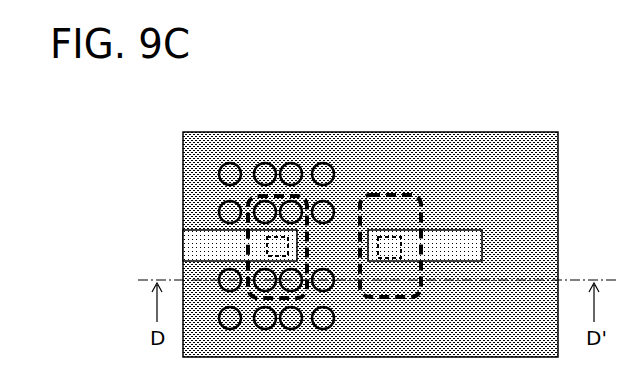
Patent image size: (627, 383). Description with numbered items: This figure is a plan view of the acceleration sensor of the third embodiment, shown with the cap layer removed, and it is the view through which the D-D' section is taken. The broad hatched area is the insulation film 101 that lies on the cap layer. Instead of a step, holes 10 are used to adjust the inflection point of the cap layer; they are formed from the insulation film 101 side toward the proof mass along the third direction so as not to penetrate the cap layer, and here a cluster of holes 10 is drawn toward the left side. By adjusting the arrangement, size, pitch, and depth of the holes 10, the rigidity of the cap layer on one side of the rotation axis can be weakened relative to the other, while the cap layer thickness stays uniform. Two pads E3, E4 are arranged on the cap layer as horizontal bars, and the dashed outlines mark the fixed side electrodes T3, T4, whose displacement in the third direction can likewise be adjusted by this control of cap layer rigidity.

The insulation film 101 is at (536, 142).
The holes 10 is at (235, 163).
The pad E3 is at (195, 245).
The pad E4 is at (457, 245).
The fixed side electrode T3 is at (282, 195).
The fixed side electrode T4 is at (392, 194).